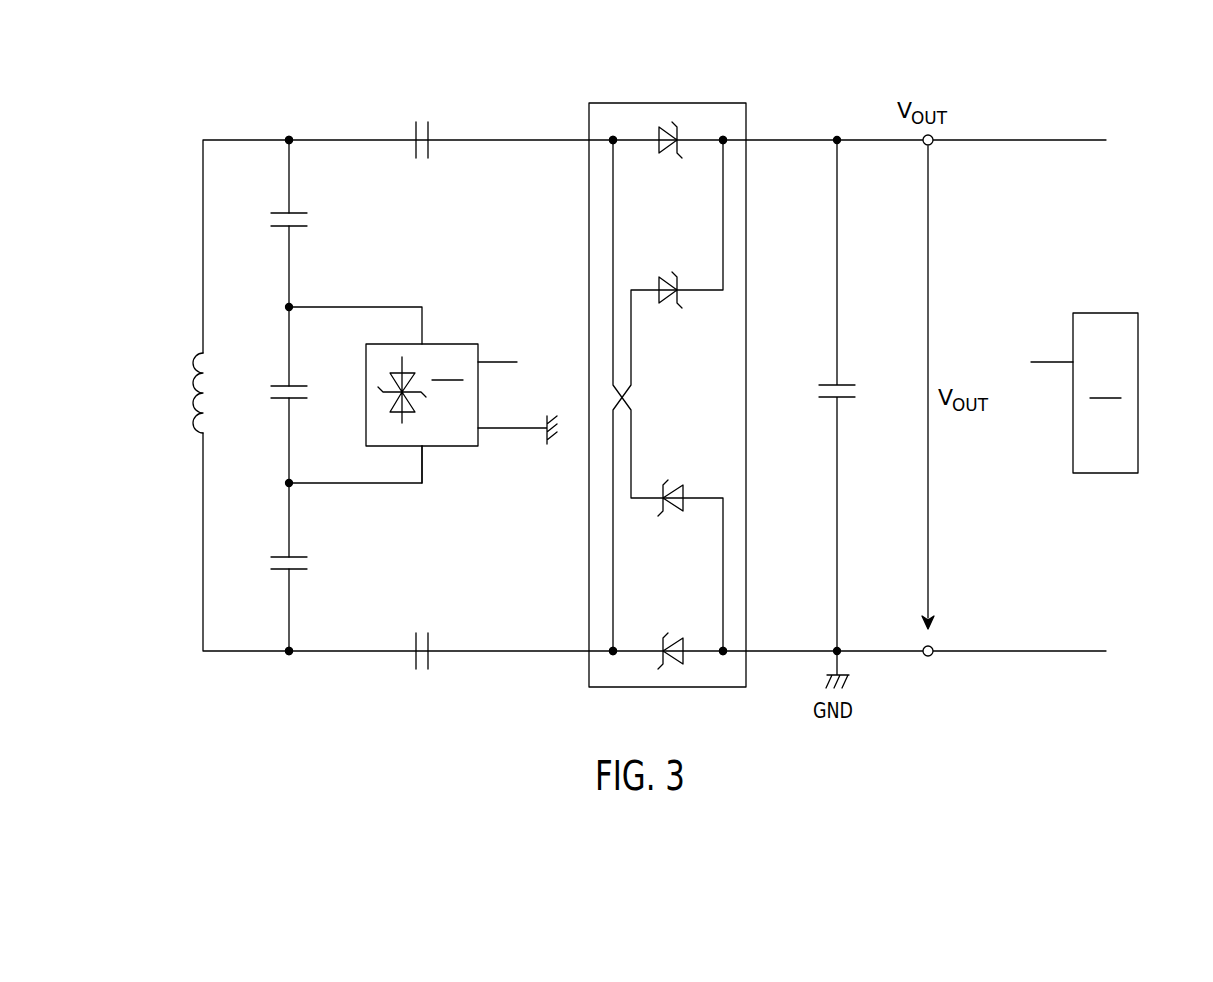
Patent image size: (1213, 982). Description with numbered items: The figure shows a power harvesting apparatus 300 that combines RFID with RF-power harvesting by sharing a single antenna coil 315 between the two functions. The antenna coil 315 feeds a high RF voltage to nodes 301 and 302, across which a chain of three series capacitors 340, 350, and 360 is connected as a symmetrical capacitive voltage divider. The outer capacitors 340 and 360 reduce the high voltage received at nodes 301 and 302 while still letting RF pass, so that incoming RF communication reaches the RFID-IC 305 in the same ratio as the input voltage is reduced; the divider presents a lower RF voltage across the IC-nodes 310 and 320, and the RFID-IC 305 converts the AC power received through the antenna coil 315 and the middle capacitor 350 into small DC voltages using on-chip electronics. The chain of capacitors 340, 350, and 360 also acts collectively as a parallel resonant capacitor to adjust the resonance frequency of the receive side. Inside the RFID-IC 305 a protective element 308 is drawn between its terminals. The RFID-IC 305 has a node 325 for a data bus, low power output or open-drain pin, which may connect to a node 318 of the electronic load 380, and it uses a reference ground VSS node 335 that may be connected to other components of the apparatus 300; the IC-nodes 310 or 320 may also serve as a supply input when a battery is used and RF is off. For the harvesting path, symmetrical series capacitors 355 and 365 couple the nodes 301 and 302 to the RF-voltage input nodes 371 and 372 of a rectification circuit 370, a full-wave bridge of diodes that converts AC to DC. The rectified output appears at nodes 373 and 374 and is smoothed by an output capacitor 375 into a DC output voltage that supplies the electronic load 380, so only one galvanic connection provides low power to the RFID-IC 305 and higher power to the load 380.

The power harvesting apparatus 300 is at (1168, 162).
The node 301 is at (289, 138).
The node 302 is at (289, 653).
The RFID-IC 305 is at (447, 367).
The bidirectional transient voltage suppressor 308 is at (392, 411).
The IC-node 310 is at (423, 404).
The antenna coil 315 is at (192, 353).
The node 318 is at (1040, 362).
The IC-node 320 is at (425, 450).
The node 325 is at (480, 360).
The VSS node 335 is at (480, 430).
The capacitor 340 is at (307, 213).
The capacitor 350 is at (304, 386).
The series capacitor 355 is at (414, 132).
The capacitor 360 is at (276, 557).
The series capacitor 365 is at (414, 663).
The rectification circuit 370 is at (676, 103).
The node 371 is at (590, 140).
The node 372 is at (590, 652).
The node 373 is at (748, 140).
The node 374 is at (746, 652).
The output capacitor 375 is at (829, 384).
The electronic load 380 is at (1105, 393).